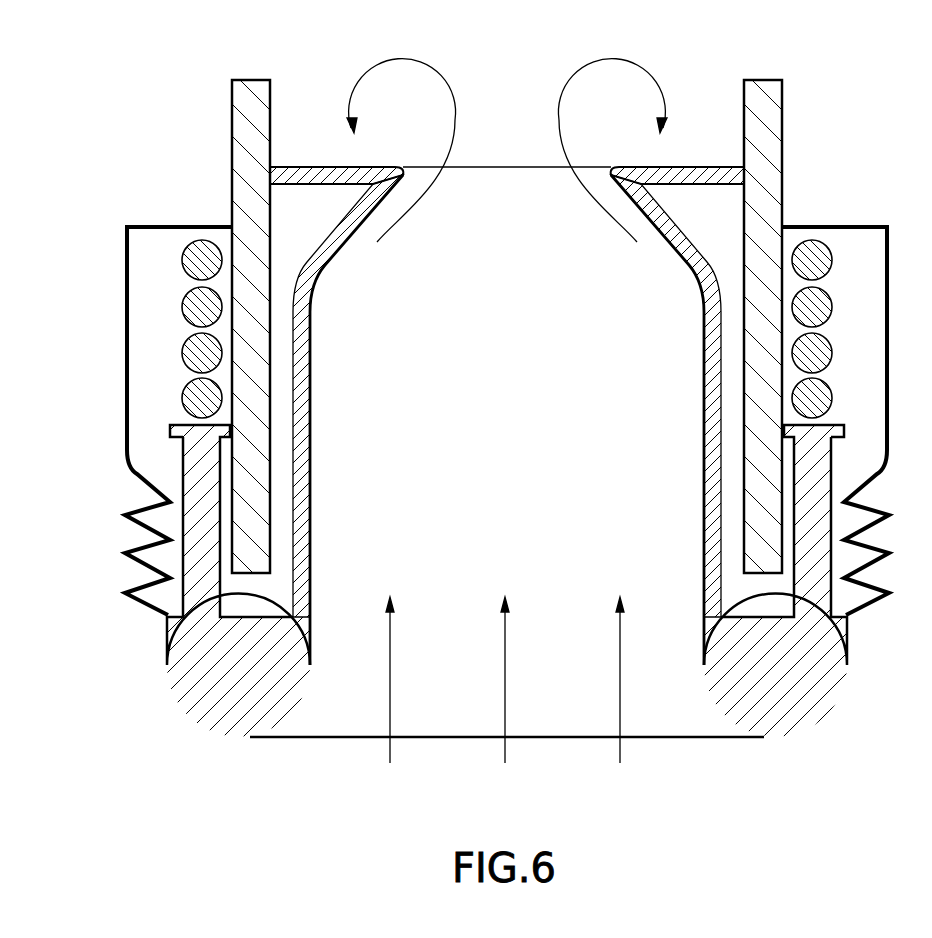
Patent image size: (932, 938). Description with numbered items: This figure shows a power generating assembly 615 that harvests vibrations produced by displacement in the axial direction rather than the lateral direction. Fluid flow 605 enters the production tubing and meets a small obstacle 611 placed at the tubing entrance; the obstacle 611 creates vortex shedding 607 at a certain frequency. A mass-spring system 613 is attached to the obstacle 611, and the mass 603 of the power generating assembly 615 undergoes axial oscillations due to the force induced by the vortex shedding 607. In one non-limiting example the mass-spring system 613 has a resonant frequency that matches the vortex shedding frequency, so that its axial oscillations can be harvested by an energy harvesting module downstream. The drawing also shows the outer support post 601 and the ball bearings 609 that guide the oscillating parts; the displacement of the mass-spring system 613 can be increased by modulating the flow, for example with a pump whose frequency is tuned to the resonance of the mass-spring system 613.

The outer support post (right) 601 is at (783, 158).
The mass 603 is at (220, 702).
The fluid flow 605 is at (505, 697).
The vortex shedding 607 is at (507, 172).
The ball bearings 609 is at (198, 256).
The obstacle 611 is at (318, 277).
The mass-spring system 613 is at (124, 386).
The power generating assembly 615 is at (282, 67).